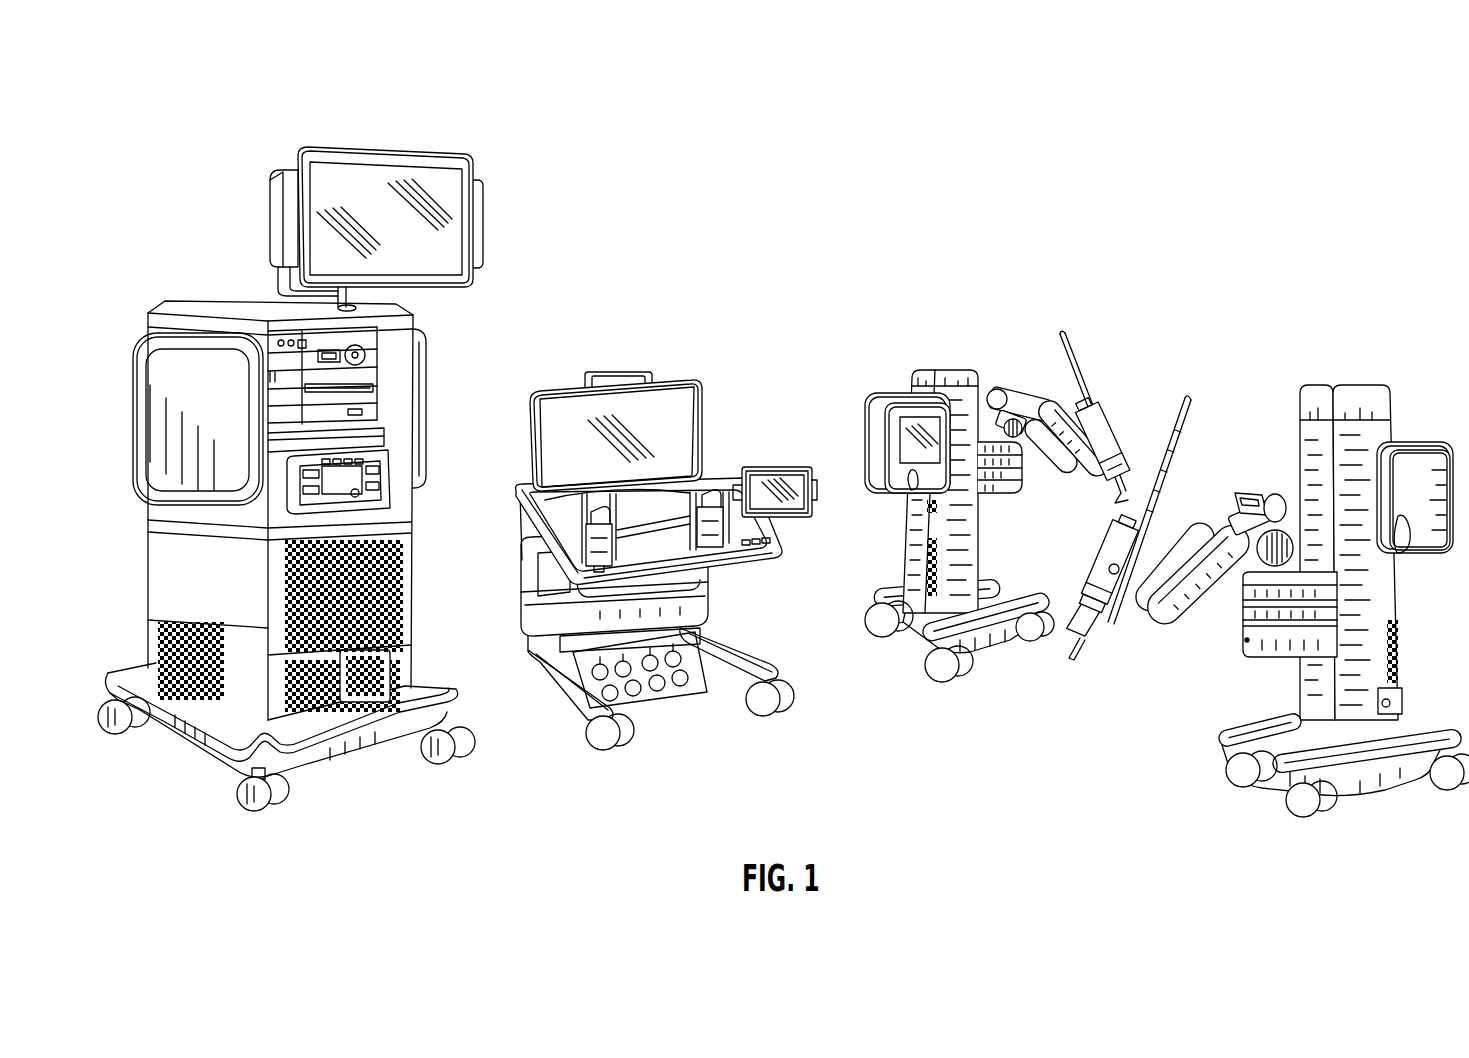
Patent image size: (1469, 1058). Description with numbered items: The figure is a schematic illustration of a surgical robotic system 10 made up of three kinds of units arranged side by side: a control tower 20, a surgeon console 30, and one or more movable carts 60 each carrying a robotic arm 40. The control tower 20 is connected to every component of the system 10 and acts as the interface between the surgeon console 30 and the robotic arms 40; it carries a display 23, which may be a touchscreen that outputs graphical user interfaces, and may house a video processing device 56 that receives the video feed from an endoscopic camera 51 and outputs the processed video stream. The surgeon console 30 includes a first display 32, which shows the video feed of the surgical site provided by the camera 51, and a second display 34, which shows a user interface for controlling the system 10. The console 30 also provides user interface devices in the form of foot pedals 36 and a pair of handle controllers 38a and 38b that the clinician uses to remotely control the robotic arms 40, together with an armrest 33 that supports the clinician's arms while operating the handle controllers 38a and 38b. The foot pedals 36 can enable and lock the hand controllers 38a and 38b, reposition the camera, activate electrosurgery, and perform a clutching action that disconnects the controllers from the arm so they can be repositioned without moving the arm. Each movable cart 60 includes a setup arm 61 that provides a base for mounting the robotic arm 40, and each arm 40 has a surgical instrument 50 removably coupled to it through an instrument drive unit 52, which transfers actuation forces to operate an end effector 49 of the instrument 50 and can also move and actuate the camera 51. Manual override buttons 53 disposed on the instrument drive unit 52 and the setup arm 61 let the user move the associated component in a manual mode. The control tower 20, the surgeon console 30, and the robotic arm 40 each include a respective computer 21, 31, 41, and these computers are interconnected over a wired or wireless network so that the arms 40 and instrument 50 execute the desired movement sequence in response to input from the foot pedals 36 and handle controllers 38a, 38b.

The surgical robotic system 10 is at (204, 145).
The control tower 20 is at (177, 568).
The computer 21 is at (390, 583).
The display 23 is at (467, 196).
The video processing device 56 is at (367, 353).
The surgeon console 30 is at (720, 444).
The computer 31 is at (533, 600).
The first display 32 is at (672, 386).
The armrest 33 is at (737, 566).
The second display 34 is at (776, 466).
The foot pedals 36 is at (666, 696).
The handle controller 38a is at (589, 518).
The handle controller 38b is at (712, 508).
The robotic arm 40 is at (1044, 389).
The computer 41 is at (967, 557).
The end effector 49 is at (1064, 662).
The surgical instrument 50 is at (1083, 652).
The endoscopic camera 51 is at (1128, 493).
The instrument drive unit 52 is at (1117, 538).
The manual override buttons 53 is at (1110, 568).
The movable cart 60 is at (950, 370).
The setup arm 61 is at (1270, 643).